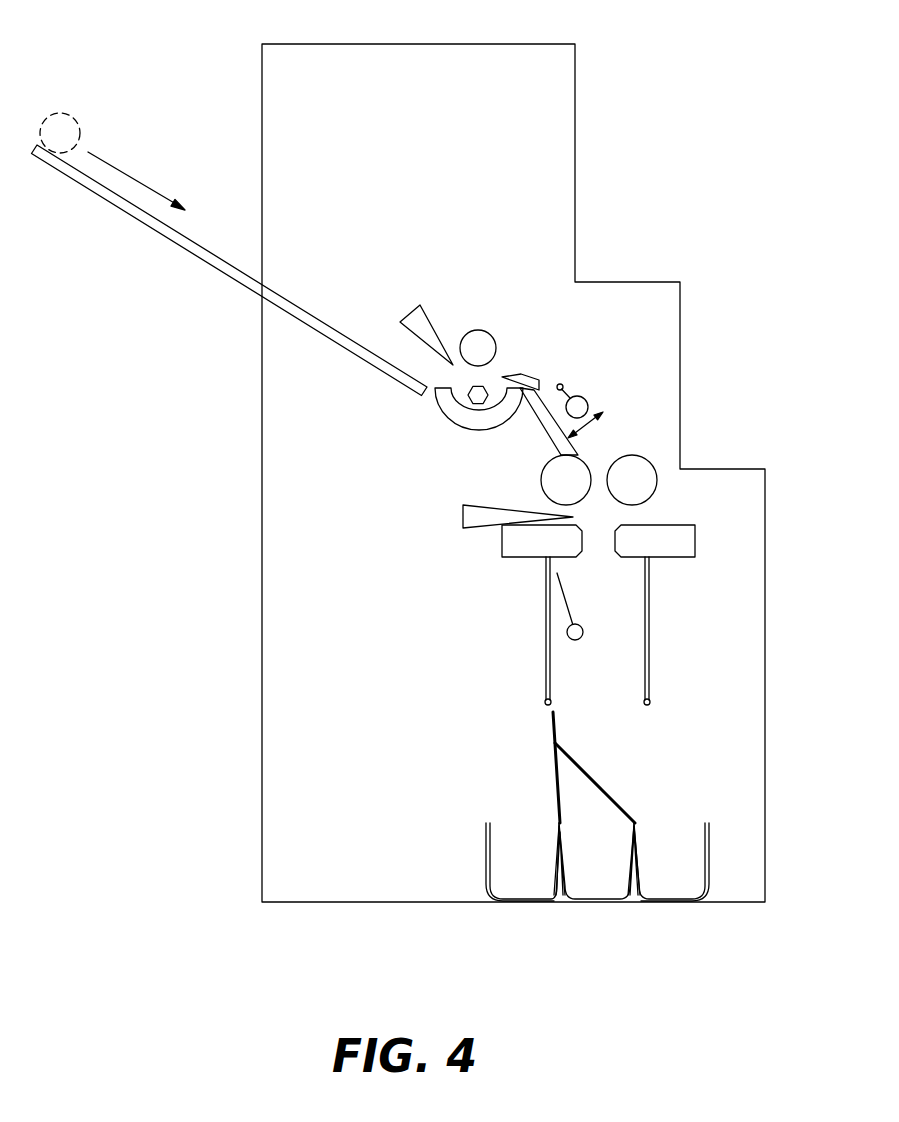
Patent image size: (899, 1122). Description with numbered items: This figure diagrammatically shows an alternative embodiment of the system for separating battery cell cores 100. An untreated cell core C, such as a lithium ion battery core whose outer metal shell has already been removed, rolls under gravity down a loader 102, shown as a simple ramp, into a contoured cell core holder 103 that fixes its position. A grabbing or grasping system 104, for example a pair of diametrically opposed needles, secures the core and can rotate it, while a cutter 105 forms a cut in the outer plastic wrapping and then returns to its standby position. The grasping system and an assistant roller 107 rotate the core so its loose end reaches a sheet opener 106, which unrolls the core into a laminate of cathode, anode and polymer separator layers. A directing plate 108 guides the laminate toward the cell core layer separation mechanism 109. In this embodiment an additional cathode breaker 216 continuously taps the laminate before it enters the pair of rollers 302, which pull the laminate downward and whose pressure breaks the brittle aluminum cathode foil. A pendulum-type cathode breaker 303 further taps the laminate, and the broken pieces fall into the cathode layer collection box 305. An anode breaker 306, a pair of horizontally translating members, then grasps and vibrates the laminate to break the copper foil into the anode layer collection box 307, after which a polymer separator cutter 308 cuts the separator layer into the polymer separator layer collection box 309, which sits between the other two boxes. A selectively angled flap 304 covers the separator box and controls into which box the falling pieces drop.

The system for separating battery cell cores 100 is at (168, 655).
The untreated cell core C is at (60, 113).
The loader 102 is at (173, 242).
The cell core holder 103 is at (445, 414).
The grabbing or grasping system 104 is at (473, 404).
The cutter 105 is at (405, 315).
The sheet opener 106 is at (527, 375).
The assistant roller 107 is at (478, 330).
The directing plate 108 is at (545, 400).
The additional cathode breaker 216 is at (585, 398).
The rollers 302 is at (544, 492).
The polymer separator cutter 308 is at (463, 515).
The cell core layer separation mechanism 109 is at (418, 533).
The anode breaker 306 is at (502, 557).
The cathode breaker 303 is at (567, 631).
The flap 304 is at (603, 788).
The cathode layer collection box 305 is at (523, 902).
The polymer separator layer collection box 309 is at (597, 902).
The anode layer collection box 307 is at (678, 903).